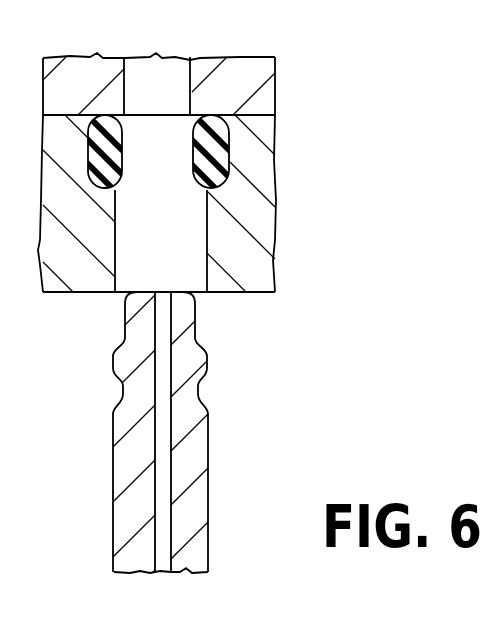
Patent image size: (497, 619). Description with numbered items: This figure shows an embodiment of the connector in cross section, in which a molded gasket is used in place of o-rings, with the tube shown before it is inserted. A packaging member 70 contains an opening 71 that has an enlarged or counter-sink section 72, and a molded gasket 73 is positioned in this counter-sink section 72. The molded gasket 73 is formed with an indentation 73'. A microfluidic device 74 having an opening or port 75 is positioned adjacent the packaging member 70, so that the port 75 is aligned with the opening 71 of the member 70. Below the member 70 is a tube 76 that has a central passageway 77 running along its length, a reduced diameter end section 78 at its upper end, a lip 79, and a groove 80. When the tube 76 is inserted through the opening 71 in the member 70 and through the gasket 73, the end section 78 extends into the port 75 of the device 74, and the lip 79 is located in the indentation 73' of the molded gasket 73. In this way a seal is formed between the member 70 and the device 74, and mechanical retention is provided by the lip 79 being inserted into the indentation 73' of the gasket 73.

The packaging member 70 is at (276, 226).
The opening 71 is at (116, 259).
The counter-sink section 72 is at (228, 150).
The molded gasket 73 is at (152, 200).
The indentation 73' is at (153, 134).
The microfluidic device 74 is at (281, 89).
The opening or port 75 is at (192, 66).
The tube 76 is at (192, 505).
The central passageway 77 is at (163, 460).
The reduced diameter end section 78 is at (198, 314).
The lip 79 is at (208, 355).
The groove 80 is at (200, 389).